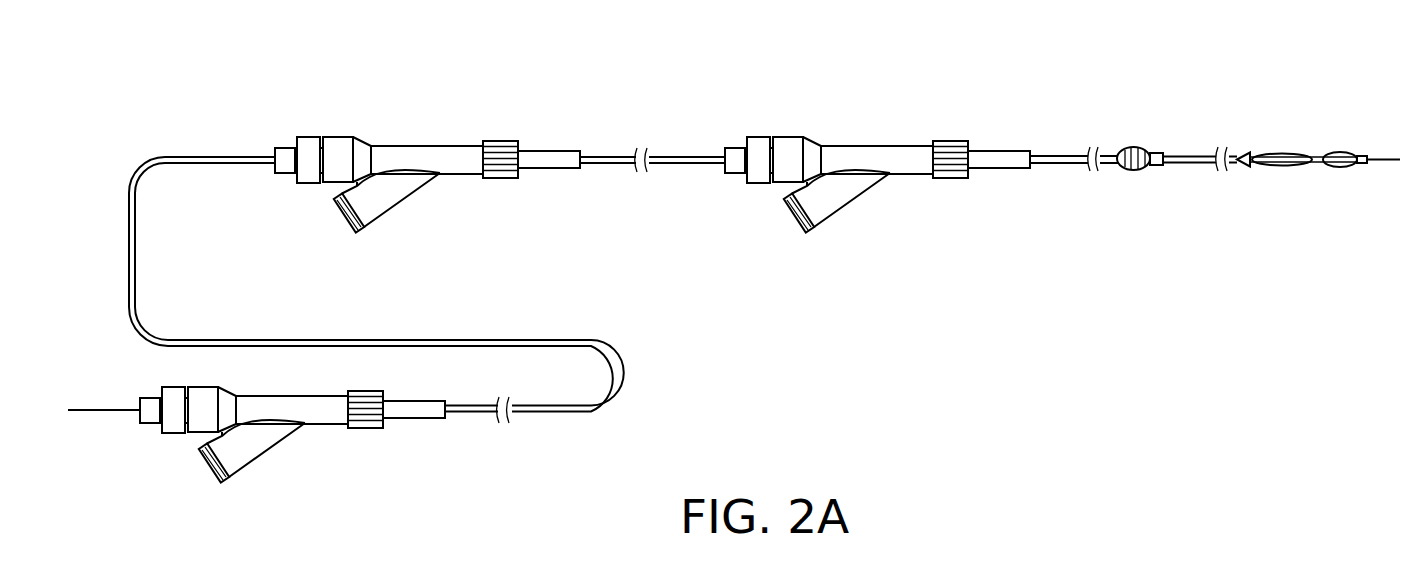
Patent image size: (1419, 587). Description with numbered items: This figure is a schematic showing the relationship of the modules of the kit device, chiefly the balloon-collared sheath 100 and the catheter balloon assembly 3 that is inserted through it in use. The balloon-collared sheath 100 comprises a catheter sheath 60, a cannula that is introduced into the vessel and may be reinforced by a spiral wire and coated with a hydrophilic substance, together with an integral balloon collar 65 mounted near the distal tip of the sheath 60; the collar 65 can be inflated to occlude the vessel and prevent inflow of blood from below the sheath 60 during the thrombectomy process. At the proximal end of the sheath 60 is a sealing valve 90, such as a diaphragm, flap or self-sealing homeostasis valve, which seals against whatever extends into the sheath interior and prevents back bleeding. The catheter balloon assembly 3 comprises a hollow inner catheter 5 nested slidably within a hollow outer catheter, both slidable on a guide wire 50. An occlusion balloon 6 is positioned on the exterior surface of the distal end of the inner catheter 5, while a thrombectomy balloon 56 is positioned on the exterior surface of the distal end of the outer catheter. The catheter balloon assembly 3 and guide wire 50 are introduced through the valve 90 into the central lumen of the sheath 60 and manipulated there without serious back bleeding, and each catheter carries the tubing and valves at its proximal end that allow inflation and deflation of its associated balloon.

The balloon-collared sheath 100 is at (917, 103).
The catheter balloon assembly 3 is at (667, 156).
The sealing valve 90 is at (785, 170).
The catheter sheath 60 is at (1047, 152).
The balloon collar 65 is at (1137, 172).
The thrombectomy balloon 56 is at (1285, 152).
The occlusion balloon 6 is at (1340, 151).
The guide wire 50 is at (1385, 165).
The inner catheter 5 is at (442, 340).